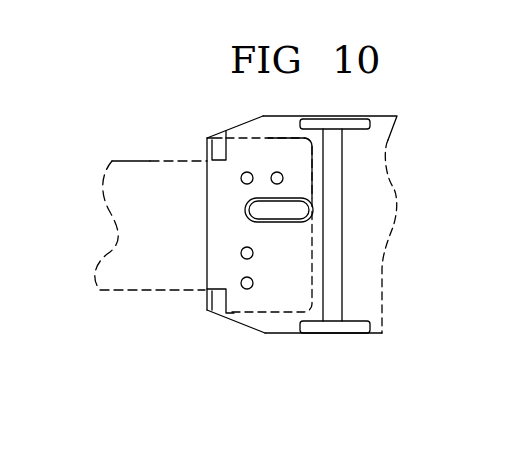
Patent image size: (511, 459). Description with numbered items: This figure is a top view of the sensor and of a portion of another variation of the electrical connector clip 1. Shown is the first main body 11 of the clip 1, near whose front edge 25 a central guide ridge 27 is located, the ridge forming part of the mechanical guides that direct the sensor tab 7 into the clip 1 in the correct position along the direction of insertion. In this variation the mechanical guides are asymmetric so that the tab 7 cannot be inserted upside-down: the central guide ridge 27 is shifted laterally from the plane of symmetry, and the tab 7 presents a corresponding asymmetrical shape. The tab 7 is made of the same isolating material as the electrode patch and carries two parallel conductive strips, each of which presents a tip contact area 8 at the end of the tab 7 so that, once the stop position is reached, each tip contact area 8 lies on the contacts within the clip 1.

The electrical connector clip 1 is at (352, 349).
The tab 7 is at (145, 153).
The tip contact area 8 is at (268, 156).
The first main body 11 is at (383, 109).
The front edge 25 is at (204, 268).
The central guide ridge 27 is at (313, 217).